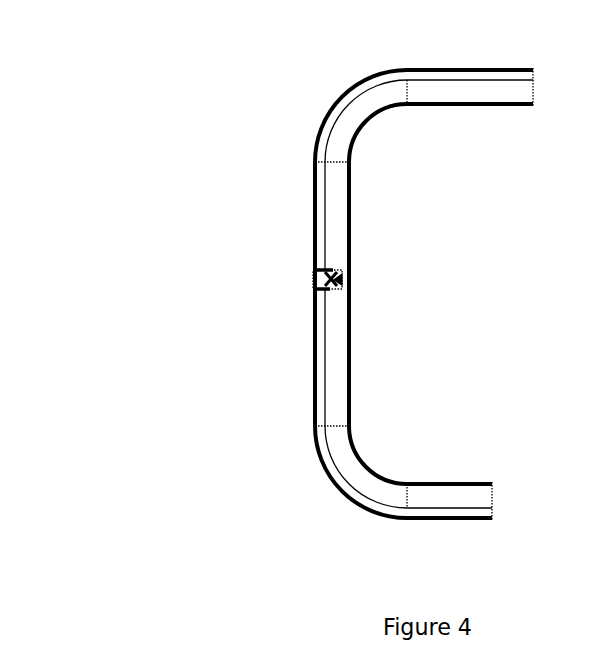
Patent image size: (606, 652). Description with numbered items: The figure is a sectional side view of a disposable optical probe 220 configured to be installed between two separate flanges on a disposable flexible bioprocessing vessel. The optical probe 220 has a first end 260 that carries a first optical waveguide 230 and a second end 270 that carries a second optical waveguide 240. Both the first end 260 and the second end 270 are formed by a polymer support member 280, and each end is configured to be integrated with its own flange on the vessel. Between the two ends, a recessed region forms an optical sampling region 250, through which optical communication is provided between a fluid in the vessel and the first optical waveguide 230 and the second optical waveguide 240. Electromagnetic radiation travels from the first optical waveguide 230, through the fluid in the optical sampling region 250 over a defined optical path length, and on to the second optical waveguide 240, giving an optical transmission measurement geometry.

The optical probe 220 is at (157, 297).
The first optical waveguide 230 is at (508, 82).
The second optical waveguide 240 is at (468, 505).
The optical sampling region 250 is at (312, 280).
The first end 260 is at (528, 70).
The second end 270 is at (483, 520).
The polymer support member 280 is at (352, 218).